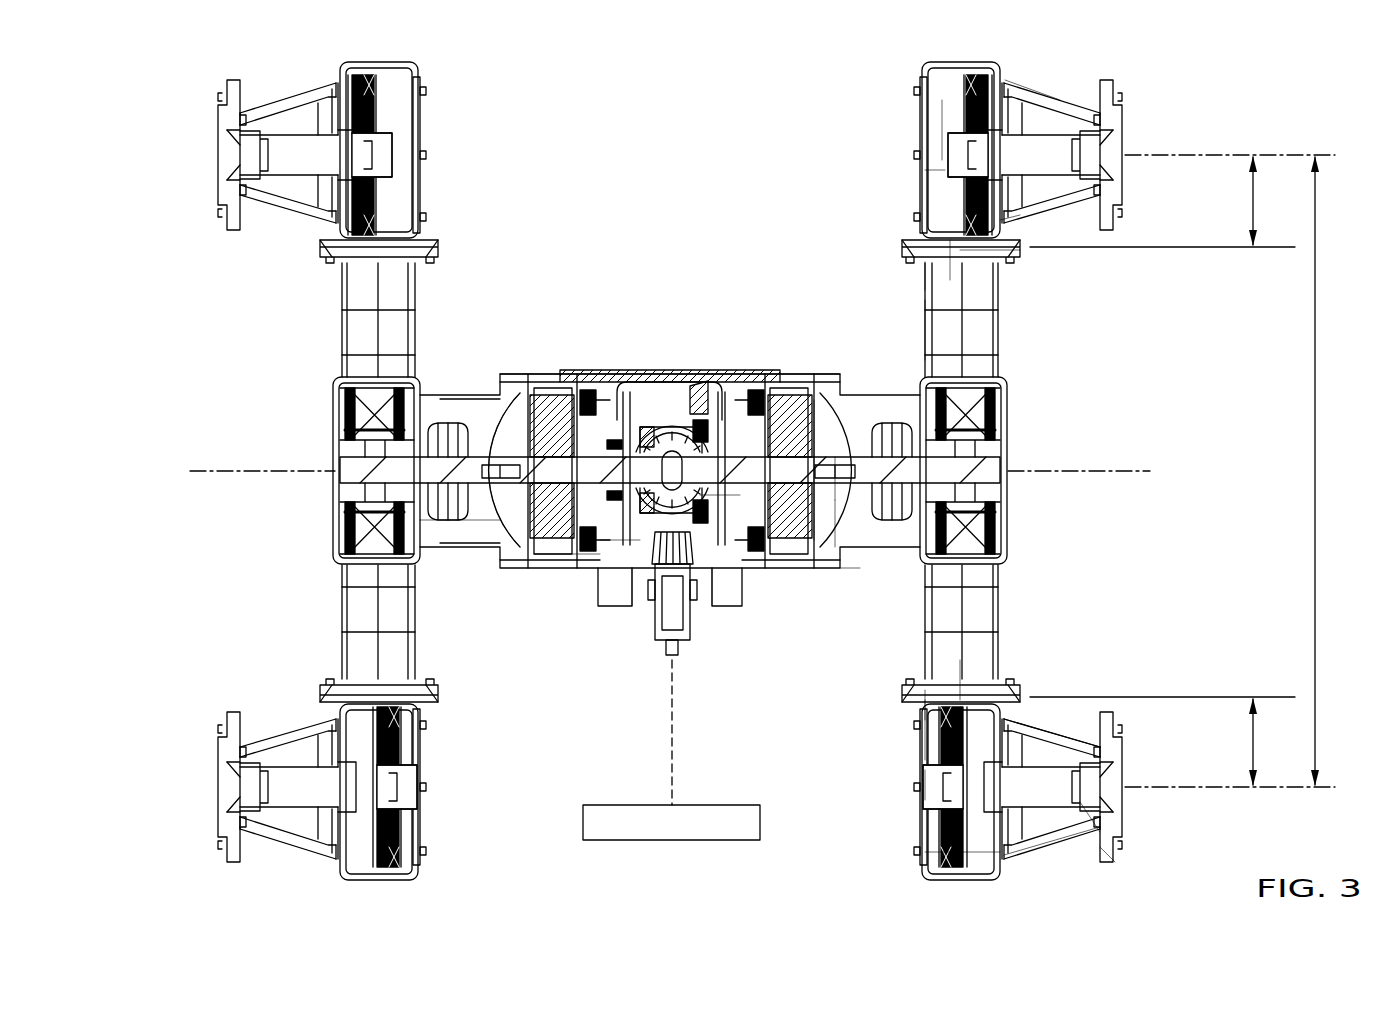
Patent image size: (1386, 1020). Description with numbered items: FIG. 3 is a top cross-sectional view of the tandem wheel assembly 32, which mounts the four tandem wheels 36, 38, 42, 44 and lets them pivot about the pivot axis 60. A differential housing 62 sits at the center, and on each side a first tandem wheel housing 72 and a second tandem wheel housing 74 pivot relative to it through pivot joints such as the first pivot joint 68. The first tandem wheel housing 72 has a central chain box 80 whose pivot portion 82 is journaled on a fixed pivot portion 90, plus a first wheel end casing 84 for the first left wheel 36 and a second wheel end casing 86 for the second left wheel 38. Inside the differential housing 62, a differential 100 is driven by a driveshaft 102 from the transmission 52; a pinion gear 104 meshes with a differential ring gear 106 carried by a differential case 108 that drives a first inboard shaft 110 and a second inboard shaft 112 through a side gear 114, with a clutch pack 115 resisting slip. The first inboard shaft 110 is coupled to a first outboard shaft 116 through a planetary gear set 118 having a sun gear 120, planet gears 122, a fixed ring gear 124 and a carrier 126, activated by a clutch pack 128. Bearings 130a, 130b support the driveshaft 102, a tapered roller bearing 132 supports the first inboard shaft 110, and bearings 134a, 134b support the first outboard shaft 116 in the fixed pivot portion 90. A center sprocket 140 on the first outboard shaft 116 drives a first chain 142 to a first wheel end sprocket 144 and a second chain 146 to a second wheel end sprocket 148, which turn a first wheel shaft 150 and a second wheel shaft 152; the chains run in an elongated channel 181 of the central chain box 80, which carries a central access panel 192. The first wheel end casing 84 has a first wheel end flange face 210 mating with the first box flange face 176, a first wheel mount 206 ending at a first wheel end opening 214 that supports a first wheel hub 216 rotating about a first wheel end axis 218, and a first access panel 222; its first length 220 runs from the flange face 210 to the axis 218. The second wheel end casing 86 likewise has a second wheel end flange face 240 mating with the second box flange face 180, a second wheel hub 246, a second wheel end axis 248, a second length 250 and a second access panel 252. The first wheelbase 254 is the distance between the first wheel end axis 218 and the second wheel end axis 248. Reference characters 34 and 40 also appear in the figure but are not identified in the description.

The tandem wheel assembly 32 is at (735, 160).
The wheel end 34 is at (1037, 858).
The first left wheel 36 is at (1058, 743).
The second left wheel 38 is at (1047, 191).
The wheel end 40 is at (315, 734).
The tandem wheel 42 is at (224, 807).
The tandem wheel 44 is at (224, 174).
The transmission 52 is at (648, 805).
The pivot axis 60 is at (255, 471).
The differential housing 62 is at (625, 370).
The first pivot joint 68 is at (825, 640).
The first tandem wheel housing 72 is at (830, 738).
The second tandem wheel housing 74 is at (422, 722).
The central chain box 80 is at (1005, 343).
The pivot portion 82 is at (448, 421).
The first wheel end casing 84 is at (961, 743).
The second wheel end casing 86 is at (954, 191).
The fixed pivot portion 90 is at (470, 395).
The differential 100 is at (630, 554).
The driveshaft 102 is at (660, 652).
The pinion gear 104 is at (638, 570).
The differential ring gear 106 is at (712, 520).
The differential case 108 is at (656, 451).
The first inboard shaft 110 is at (718, 427).
The second inboard shaft 112 is at (582, 390).
The side gear 114 is at (620, 560).
The clutch pack 115 is at (700, 395).
The first outboard shaft 116 is at (885, 457).
The planetary gear set 118 is at (793, 368).
The sun gear 120 is at (505, 557).
The planet gears 122 is at (540, 395).
The fixed ring gear 124 is at (805, 554).
The carrier 126 is at (820, 520).
The clutch pack 128 is at (756, 390).
The first bearing 130a is at (662, 550).
The second bearing 130b is at (718, 548).
The tapered roller bearing 132 is at (660, 427).
The first bearing 134a is at (835, 515).
The second bearing 134b is at (845, 492).
The center sprocket 140 is at (912, 471).
The first chain 142 is at (1005, 664).
The first wheel end sprocket 144 is at (1060, 732).
The second chain 146 is at (988, 282).
The second wheel end sprocket 148 is at (955, 130).
The first wheel shaft 150 is at (1050, 772).
The second wheel shaft 152 is at (1020, 120).
The first box flange face 176 is at (952, 702).
The second box flange face 180 is at (1020, 228).
The elongated channel 181 is at (950, 268).
The central access panel 192 is at (1008, 430).
The first wheel mount 206 is at (1030, 862).
The first wheel end flange face 210 is at (925, 697).
The first wheel end opening 214 is at (1082, 834).
The first wheel hub 216 is at (1125, 860).
The first wheel end axis 218 is at (1165, 785).
The first length 220 is at (1254, 742).
The first access panel 222 is at (930, 782).
The second wheel end flange face 240 is at (992, 258).
The second wheel hub 246 is at (1118, 245).
The second wheel end axis 248 is at (1160, 152).
The second length 250 is at (1254, 201).
The second access panel 252 is at (905, 185).
The first wheelbase 254 is at (1314, 471).